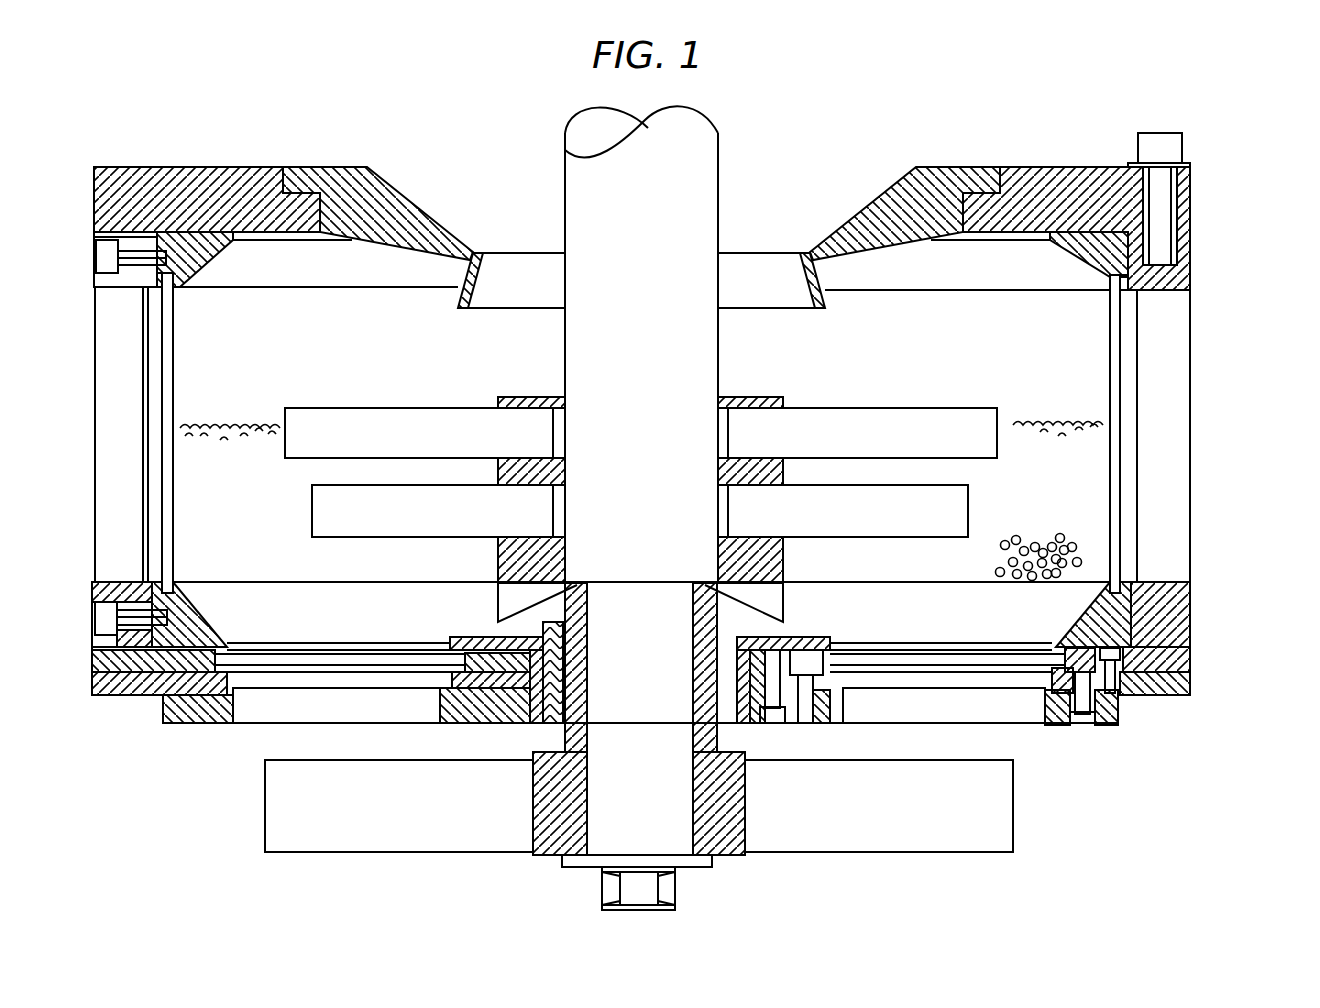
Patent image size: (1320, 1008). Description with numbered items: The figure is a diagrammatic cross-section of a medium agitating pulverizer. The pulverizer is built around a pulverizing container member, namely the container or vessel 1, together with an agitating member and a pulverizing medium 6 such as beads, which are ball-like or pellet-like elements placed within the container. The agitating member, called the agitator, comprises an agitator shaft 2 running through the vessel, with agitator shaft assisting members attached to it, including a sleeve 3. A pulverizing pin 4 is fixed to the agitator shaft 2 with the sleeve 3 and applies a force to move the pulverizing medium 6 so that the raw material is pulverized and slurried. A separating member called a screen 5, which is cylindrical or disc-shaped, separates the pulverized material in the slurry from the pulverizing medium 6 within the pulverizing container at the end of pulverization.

The container member 1 is at (1196, 321).
The agitator shaft 2 is at (558, 361).
The sleeve 3 is at (793, 388).
The pulverizer pin 4 is at (277, 448).
The screen 5 is at (1131, 384).
The pulverizing medium 6 is at (1085, 544).